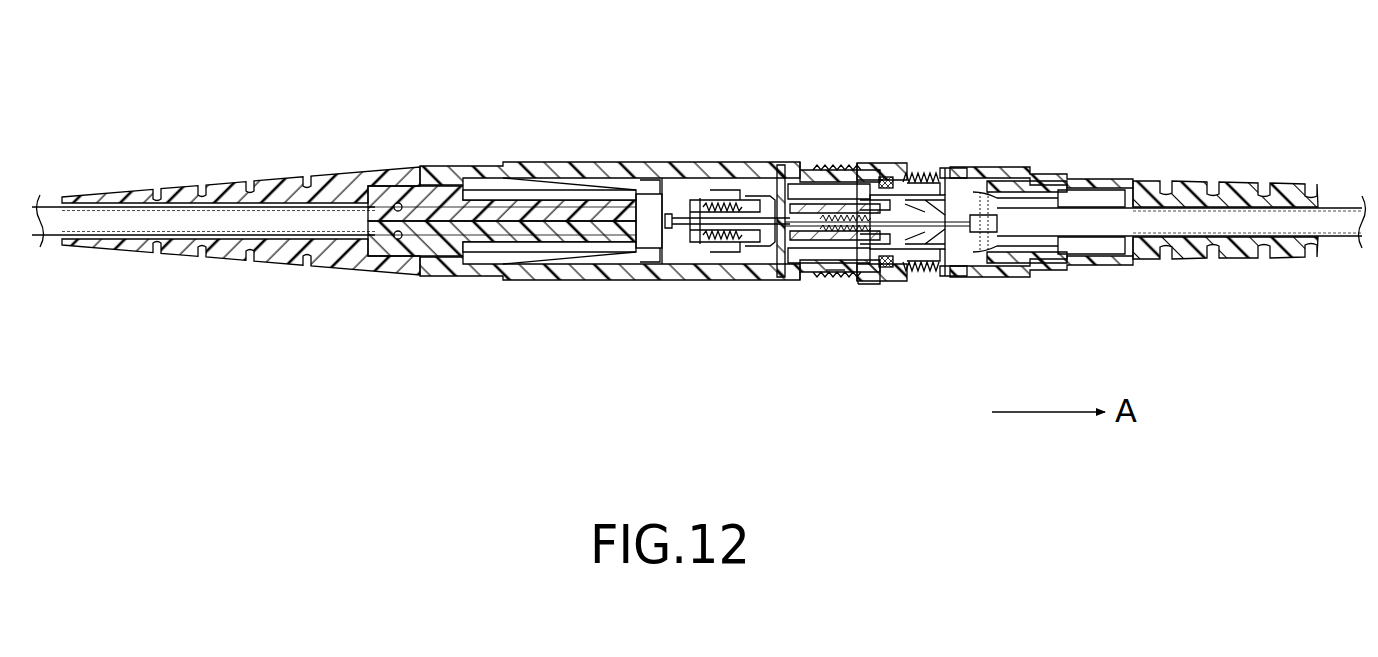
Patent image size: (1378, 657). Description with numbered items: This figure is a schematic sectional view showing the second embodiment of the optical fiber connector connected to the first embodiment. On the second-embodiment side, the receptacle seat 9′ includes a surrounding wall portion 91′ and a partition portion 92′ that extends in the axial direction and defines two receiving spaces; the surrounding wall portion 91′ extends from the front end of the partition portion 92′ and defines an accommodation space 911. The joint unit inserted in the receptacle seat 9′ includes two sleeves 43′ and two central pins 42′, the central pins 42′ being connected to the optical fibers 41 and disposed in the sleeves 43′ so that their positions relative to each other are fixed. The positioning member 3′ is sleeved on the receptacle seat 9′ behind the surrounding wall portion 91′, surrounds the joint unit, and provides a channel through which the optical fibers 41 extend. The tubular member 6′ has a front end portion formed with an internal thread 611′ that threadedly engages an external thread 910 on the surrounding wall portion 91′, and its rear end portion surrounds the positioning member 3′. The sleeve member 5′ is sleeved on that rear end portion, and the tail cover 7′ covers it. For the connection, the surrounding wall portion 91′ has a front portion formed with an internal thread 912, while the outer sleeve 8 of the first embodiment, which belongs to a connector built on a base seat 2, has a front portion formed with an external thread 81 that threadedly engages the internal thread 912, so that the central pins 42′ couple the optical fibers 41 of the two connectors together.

The base seat 2 is at (833, 288).
The positioning member 3′ is at (575, 192).
The sleeve member 5′ is at (325, 252).
The tubular member 6′ is at (533, 162).
The tail cover 7′ is at (352, 172).
The outer sleeve 8 is at (1001, 166).
The receptacle seat 9′ is at (871, 160).
The optical fibers 41 is at (645, 193).
The central pins 42′ is at (796, 184).
The sleeves 43′ is at (698, 202).
The external thread 81 is at (926, 176).
The surrounding wall portion 91′ is at (904, 176).
The partition portion 92′ is at (745, 198).
The internal thread 611′ is at (843, 165).
The external thread 910 is at (822, 278).
The accommodation space 911 is at (857, 285).
The internal thread 912 is at (930, 280).